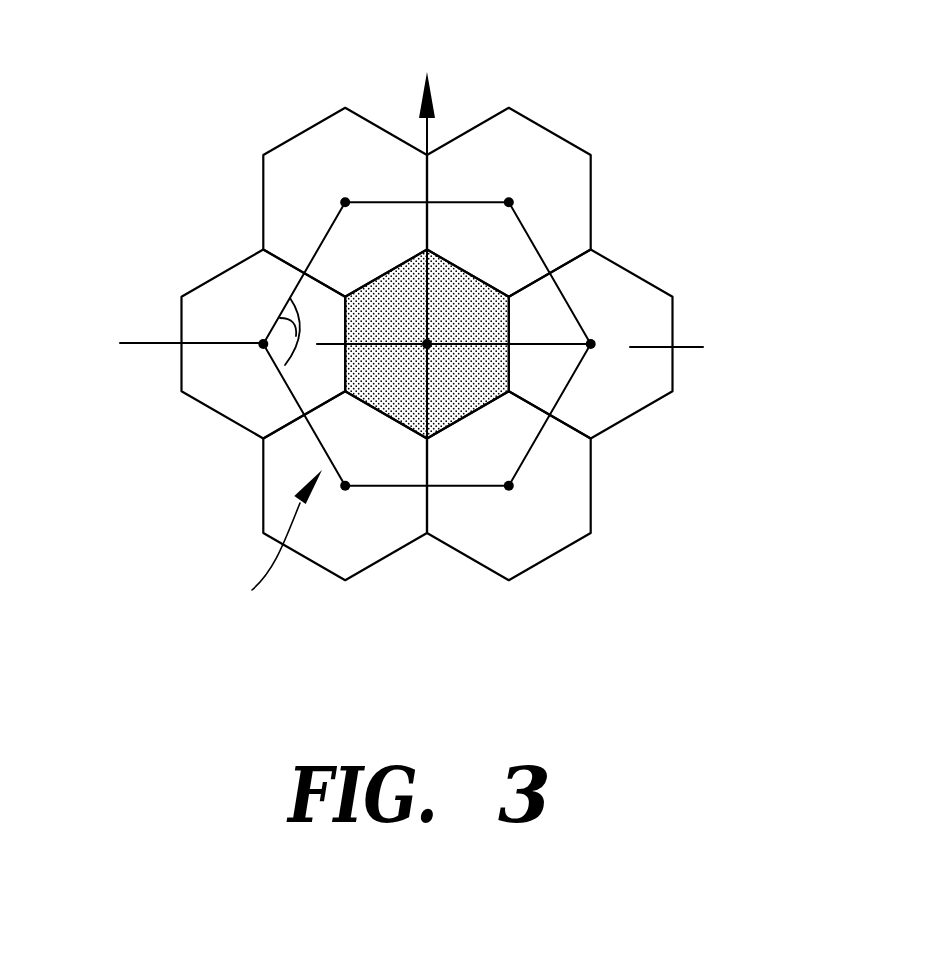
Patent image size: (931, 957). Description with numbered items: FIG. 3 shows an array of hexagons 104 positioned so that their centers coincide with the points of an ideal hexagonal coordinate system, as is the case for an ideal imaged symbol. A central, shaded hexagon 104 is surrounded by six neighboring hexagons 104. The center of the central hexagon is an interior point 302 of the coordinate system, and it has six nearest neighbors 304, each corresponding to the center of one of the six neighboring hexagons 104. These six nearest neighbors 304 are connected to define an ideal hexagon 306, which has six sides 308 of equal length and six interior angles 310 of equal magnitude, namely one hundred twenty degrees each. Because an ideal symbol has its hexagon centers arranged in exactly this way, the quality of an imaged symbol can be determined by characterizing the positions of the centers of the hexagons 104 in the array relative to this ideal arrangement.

The hexagon 104 is at (305, 128).
The interior point 302 is at (427, 344).
The nearest neighbor 304 is at (509, 203).
The ideal hexagon 306 is at (244, 543).
The side 308 is at (323, 242).
The interior angle 310 is at (297, 317).